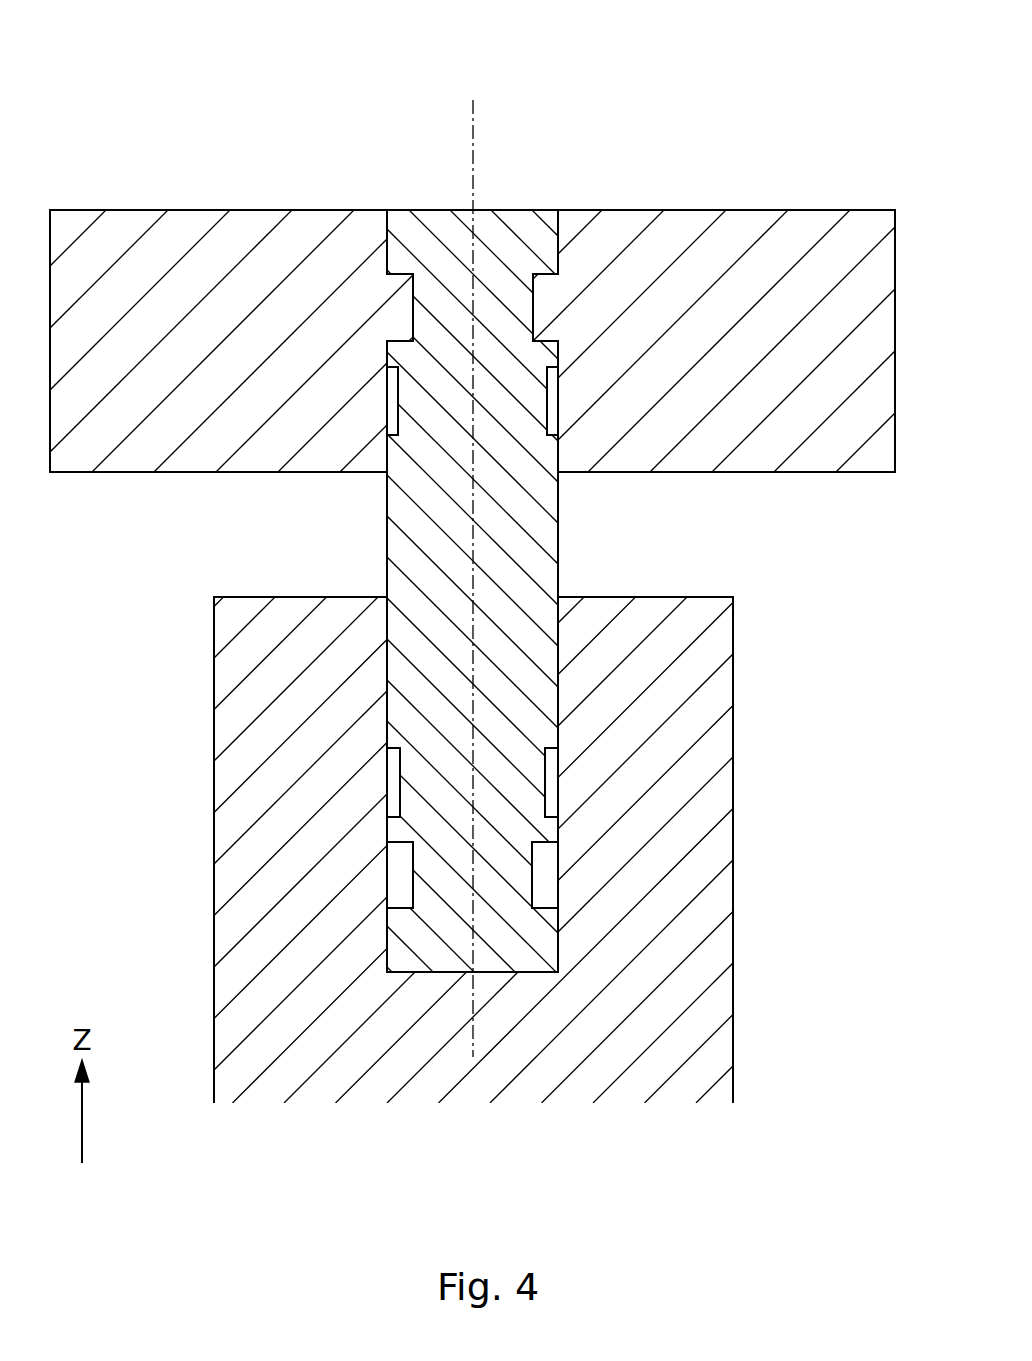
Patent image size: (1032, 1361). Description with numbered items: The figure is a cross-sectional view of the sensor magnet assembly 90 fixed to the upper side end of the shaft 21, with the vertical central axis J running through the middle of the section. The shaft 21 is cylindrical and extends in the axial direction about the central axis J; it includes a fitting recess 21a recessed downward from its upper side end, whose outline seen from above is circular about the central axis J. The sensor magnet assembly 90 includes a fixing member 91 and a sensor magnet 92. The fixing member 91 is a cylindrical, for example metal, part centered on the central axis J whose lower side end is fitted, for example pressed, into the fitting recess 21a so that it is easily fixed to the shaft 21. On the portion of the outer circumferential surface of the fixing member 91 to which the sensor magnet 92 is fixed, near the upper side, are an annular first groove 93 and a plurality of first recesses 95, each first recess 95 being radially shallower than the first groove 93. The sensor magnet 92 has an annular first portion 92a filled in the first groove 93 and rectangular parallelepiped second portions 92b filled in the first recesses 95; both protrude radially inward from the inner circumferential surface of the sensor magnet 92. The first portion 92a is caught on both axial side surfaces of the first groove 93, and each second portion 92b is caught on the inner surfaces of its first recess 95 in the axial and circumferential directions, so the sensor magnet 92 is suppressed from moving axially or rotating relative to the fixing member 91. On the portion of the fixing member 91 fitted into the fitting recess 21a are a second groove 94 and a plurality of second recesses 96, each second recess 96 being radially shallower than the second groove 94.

The sensor magnet assembly 90 is at (842, 123).
The fixing member 91 is at (540, 566).
The sensor magnet 92 is at (100, 210).
The first portion 92a is at (402, 297).
The second portion 92b is at (390, 393).
The first groove 93 is at (545, 277).
The second groove 94 is at (552, 906).
The first recess 95 is at (393, 432).
The second recess 96 is at (394, 812).
The shaft 21 is at (718, 950).
The fitting recess 21a is at (420, 972).
The central axis J is at (473, 153).